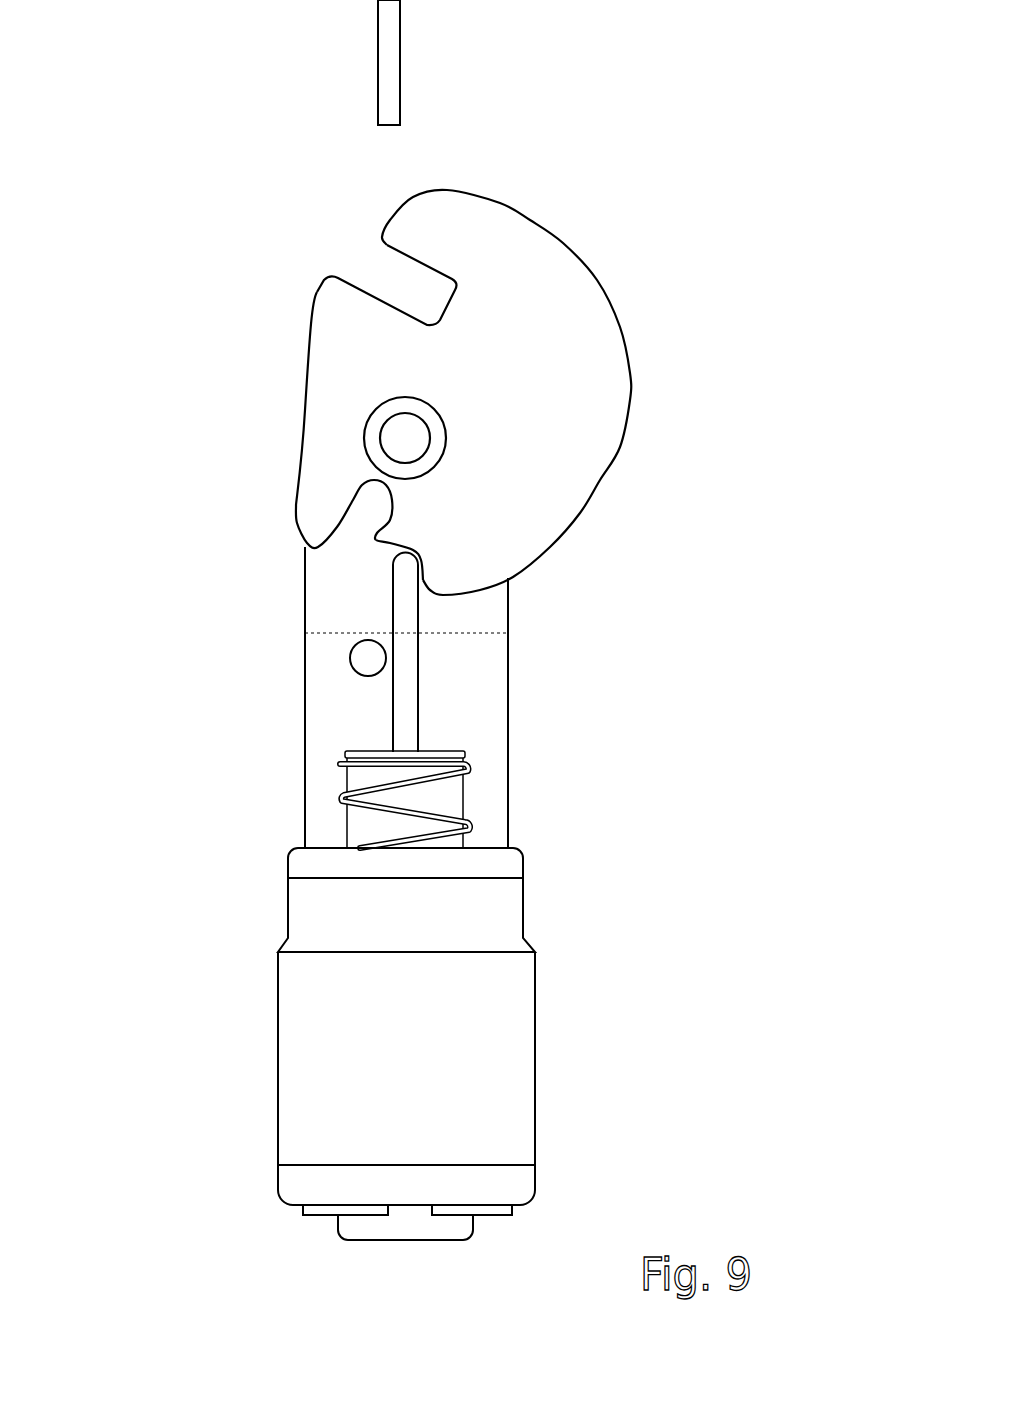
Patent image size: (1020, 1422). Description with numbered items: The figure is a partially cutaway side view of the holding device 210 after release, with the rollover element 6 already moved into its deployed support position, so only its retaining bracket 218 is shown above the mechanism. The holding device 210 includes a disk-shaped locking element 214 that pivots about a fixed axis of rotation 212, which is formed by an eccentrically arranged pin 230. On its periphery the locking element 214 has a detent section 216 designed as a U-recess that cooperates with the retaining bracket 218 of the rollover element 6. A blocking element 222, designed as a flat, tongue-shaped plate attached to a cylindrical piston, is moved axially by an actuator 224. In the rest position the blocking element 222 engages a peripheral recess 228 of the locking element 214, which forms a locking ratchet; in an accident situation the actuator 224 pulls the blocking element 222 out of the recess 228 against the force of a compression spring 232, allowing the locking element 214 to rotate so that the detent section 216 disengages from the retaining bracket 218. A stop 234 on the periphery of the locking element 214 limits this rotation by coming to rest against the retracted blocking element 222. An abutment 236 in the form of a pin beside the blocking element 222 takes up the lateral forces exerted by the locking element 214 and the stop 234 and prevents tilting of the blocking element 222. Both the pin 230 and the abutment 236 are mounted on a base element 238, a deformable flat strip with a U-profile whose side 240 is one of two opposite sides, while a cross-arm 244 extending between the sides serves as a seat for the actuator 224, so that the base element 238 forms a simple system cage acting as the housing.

The rollover element 6 is at (519, 62).
The retaining bracket 218 is at (398, 112).
The locking element 214 is at (533, 355).
The detent section 216 is at (380, 300).
The pin 230 is at (395, 423).
The axis of rotation 212 is at (405, 438).
The peripheral recess 228 is at (347, 512).
The stop 234 is at (425, 570).
The abutment 236 is at (368, 658).
The blocking element 222 is at (405, 673).
The side 240 is at (362, 702).
The compression spring 232 is at (390, 783).
The base element 238 is at (305, 835).
The holding device 210 is at (555, 905).
The actuator 224 is at (404, 1087).
The cross-arm 244 is at (322, 1210).